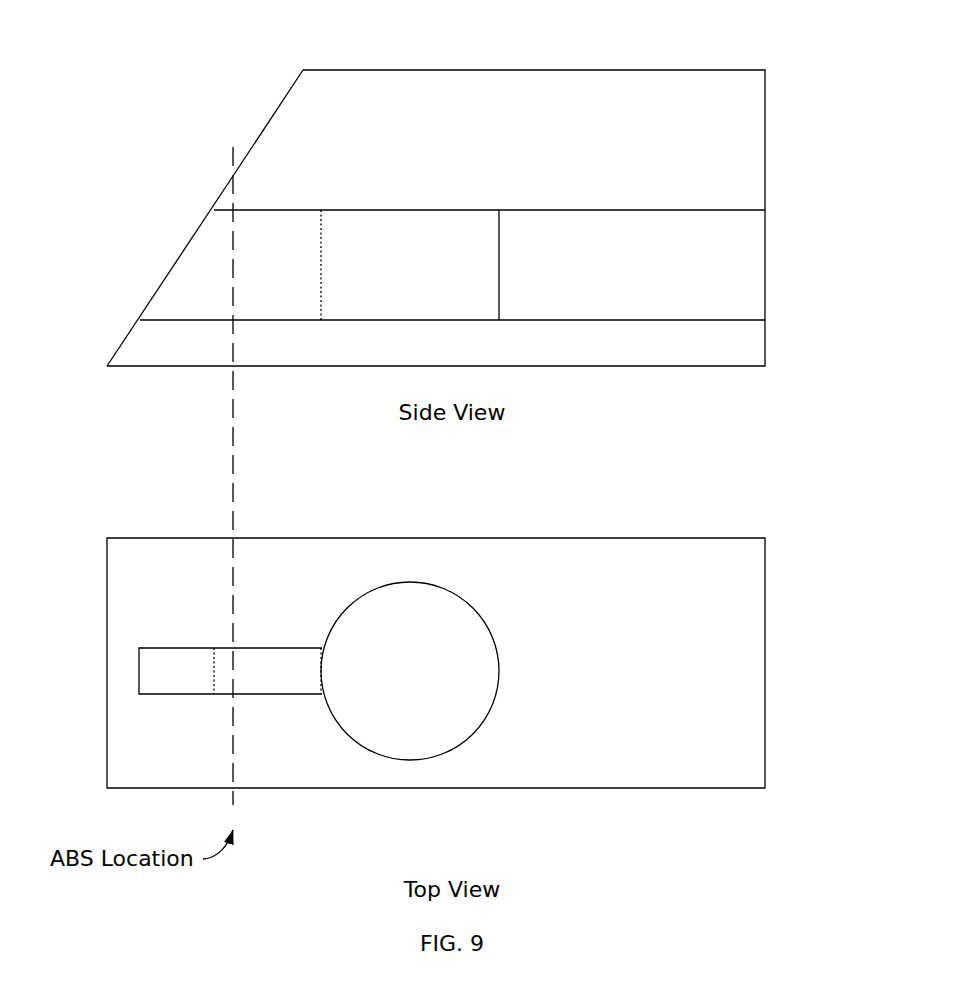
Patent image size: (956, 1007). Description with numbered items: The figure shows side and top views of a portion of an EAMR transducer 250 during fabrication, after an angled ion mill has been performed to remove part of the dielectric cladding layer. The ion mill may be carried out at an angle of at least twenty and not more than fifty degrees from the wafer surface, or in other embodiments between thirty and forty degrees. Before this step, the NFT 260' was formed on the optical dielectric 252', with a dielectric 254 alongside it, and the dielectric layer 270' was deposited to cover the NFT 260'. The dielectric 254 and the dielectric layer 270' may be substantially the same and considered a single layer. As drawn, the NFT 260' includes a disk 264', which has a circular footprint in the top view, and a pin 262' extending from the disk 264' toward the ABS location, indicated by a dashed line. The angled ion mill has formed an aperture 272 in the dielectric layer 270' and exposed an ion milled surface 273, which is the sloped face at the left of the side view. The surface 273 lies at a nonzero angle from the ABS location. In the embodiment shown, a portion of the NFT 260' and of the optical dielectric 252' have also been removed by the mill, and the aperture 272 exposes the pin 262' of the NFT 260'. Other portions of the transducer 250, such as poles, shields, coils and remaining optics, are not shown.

The EAMR transducer 250 is at (472, 34).
The NFT 260' is at (430, 400).
The dielectric layer 270' is at (480, 458).
The dielectric 254 is at (765, 248).
The ion milled surface 273 is at (198, 179).
The aperture 272 is at (135, 257).
The optical dielectric 252' is at (439, 532).
The pin 262' is at (219, 507).
The disk 264' is at (429, 412).